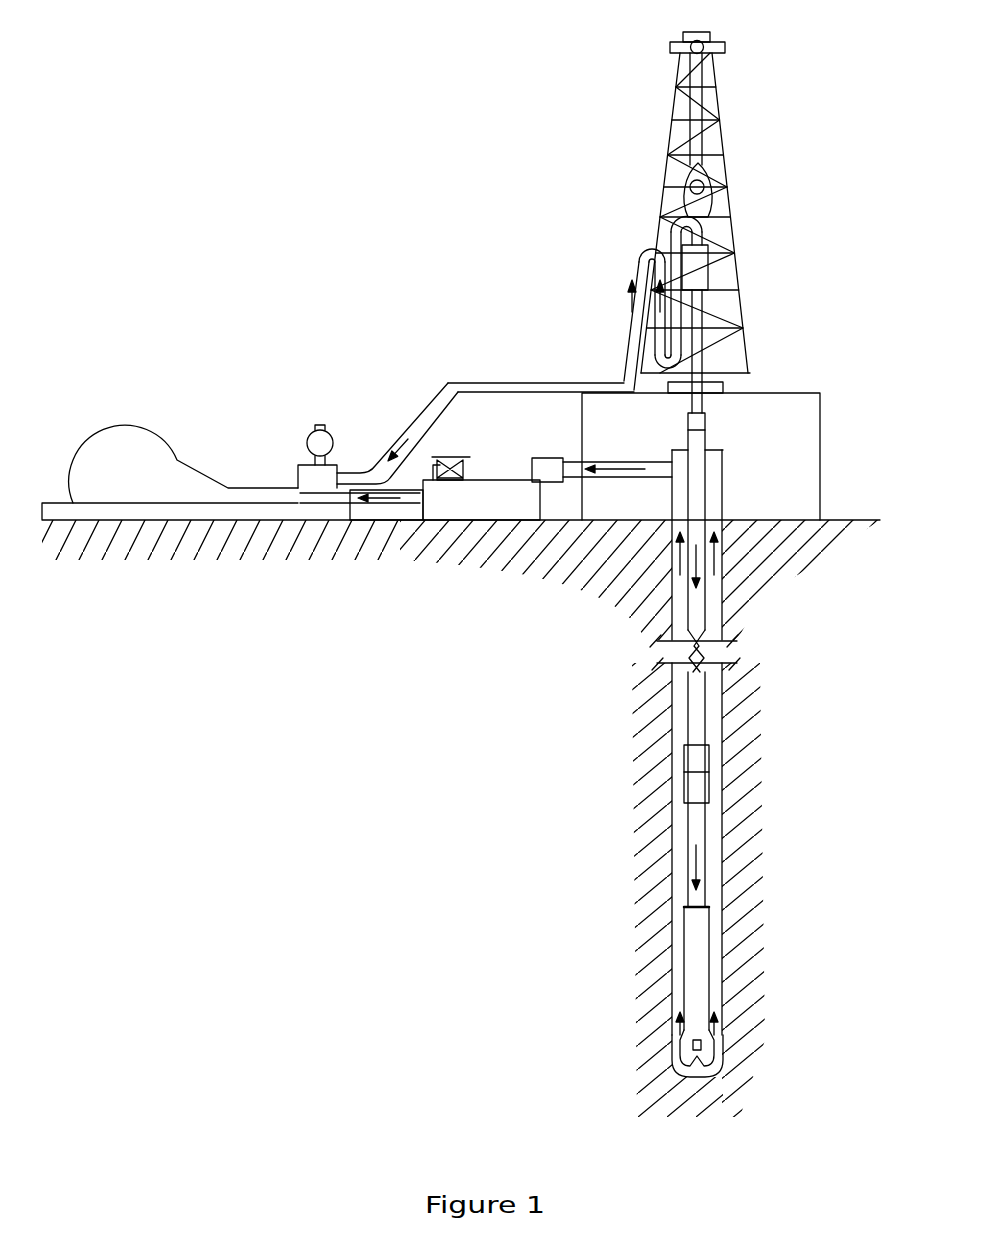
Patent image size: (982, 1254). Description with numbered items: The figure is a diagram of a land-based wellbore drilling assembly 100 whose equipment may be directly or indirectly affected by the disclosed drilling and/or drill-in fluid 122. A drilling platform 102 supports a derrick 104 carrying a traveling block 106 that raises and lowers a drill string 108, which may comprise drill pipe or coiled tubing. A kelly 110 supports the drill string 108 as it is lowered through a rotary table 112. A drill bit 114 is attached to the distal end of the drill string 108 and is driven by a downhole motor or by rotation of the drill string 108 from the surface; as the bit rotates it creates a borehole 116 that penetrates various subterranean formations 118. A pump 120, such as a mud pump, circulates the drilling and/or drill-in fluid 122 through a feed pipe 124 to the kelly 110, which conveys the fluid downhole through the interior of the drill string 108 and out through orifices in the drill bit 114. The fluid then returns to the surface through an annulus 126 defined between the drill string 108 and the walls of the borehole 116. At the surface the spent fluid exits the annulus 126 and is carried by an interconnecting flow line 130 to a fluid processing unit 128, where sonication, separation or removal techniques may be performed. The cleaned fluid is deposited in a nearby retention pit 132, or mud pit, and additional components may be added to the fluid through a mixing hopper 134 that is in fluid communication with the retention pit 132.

The wellbore drilling assembly 100 is at (421, 117).
The drilling platform 102 is at (823, 414).
The derrick 104 is at (736, 126).
The traveling block 106 is at (722, 184).
The drill string 108 is at (700, 612).
The kelly 110 is at (700, 300).
The rotary table 112 is at (722, 390).
The drill bit 114 is at (723, 1043).
The borehole 116 is at (723, 717).
The subterranean formations 118 is at (559, 753).
The pump 120 is at (138, 484).
The drilling and/or drill-in fluid 122 is at (365, 475).
The feed pipe 124 is at (460, 380).
The annulus 126 is at (713, 858).
The fluid processing unit 128 is at (548, 458).
The interconnecting flow line 130 is at (656, 478).
The retention pit 132 is at (498, 513).
The mixing hopper 134 is at (440, 485).